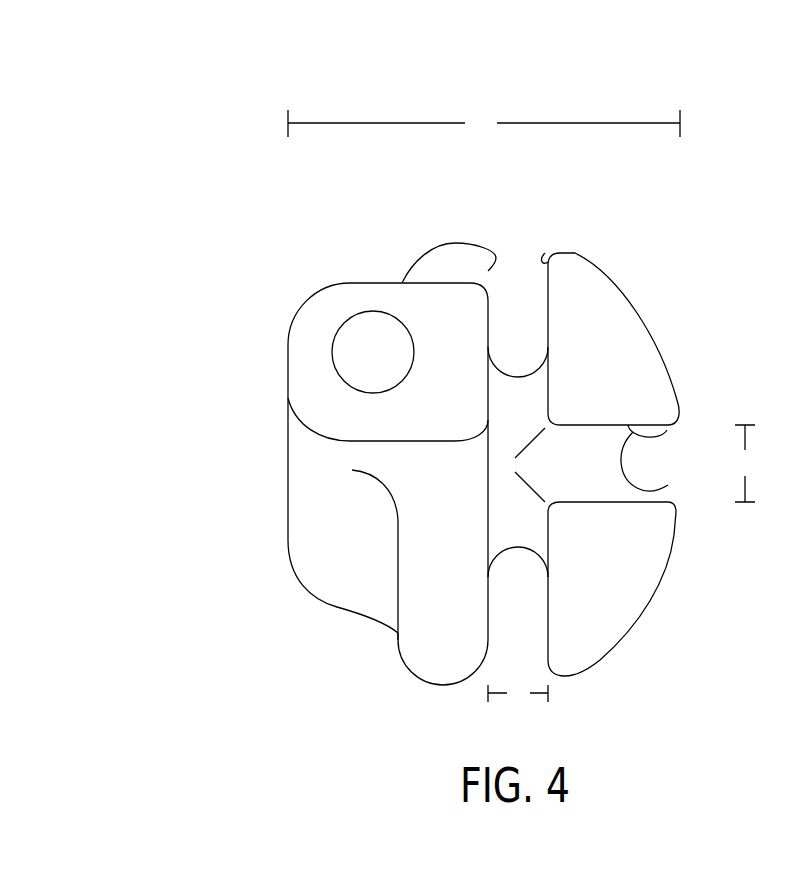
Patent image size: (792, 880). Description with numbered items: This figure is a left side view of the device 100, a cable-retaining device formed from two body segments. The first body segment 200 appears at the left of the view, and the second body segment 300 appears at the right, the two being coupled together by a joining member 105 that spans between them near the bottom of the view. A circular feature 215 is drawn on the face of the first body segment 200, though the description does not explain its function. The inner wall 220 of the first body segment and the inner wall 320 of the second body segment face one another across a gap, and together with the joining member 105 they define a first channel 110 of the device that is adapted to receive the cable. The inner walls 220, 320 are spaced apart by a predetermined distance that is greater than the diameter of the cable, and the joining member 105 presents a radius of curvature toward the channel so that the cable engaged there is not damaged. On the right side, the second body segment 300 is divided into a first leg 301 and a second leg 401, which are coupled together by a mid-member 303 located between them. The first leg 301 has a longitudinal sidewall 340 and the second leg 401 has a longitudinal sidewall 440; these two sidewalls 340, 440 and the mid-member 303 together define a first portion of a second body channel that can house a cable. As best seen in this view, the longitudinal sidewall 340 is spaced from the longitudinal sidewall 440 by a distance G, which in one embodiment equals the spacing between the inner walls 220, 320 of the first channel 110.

The device 100 is at (246, 149).
The first channel 110 is at (513, 226).
The joining member 105 is at (517, 550).
The first body segment 200 is at (312, 644).
The aperture 215 is at (333, 350).
The inner wall of the first body segment 220 is at (497, 257).
The second body segment 300 is at (704, 245).
The first leg 301 is at (610, 272).
The inner wall of the second body segment 320 is at (545, 253).
The longitudinal sidewall of the first leg 340 is at (633, 448).
The mid-member 303 is at (630, 467).
The longitudinal sidewall of the second leg 440 is at (668, 485).
The second leg 401 is at (630, 630).